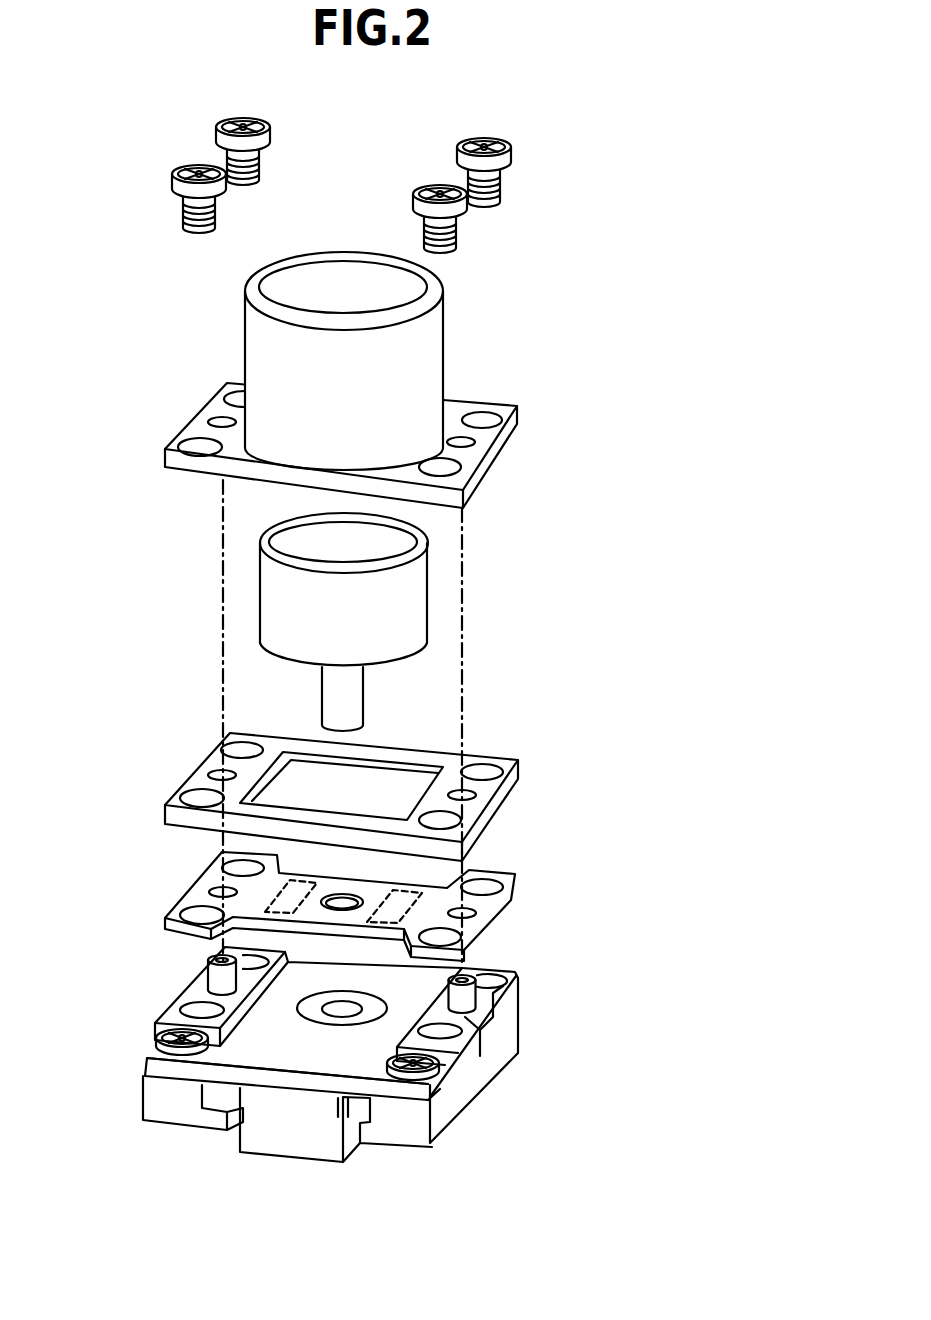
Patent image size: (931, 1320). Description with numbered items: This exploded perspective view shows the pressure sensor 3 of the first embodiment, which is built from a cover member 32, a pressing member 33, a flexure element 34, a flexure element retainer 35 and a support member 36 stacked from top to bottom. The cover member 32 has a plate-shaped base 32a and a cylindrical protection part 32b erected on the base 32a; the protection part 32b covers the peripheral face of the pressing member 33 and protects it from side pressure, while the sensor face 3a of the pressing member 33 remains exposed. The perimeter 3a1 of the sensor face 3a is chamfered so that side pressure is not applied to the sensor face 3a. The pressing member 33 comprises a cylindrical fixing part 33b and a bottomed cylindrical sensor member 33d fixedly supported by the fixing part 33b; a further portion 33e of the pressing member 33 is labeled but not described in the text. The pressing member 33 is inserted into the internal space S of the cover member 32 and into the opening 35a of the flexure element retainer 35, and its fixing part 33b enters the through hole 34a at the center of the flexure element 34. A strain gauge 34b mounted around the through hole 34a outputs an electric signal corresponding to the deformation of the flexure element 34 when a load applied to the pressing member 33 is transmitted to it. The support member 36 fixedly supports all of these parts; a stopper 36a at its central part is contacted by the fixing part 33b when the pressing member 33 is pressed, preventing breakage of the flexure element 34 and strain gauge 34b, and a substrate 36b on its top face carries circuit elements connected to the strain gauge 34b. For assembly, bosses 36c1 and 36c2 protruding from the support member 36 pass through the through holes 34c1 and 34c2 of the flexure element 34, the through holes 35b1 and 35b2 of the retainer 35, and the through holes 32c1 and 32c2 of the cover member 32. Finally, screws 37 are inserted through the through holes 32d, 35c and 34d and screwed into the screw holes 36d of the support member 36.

The pressure sensor 3 is at (675, 263).
The internal space S is at (390, 286).
The cover member 32 is at (346, 376).
The base 32a is at (513, 434).
The protection part 32b is at (427, 330).
The through hole 32c1 is at (220, 420).
The through hole 32c2 is at (478, 437).
The through holes 32d is at (190, 447).
The pressing member 33 is at (379, 617).
The sensor face 3a is at (384, 534).
The perimeter 3a1 is at (415, 553).
The sensor member 33d is at (388, 603).
The lower edge of sensor element 33e is at (280, 658).
The fixing part 33b is at (365, 700).
The flexure element retainer 35 is at (341, 790).
The opening 35a is at (366, 786).
The through hole 35b1 is at (221, 769).
The through hole 35b2 is at (478, 791).
The through holes 35c is at (198, 798).
The flexure element 34 is at (357, 913).
The through hole 34a is at (352, 897).
The strain gauge 34b is at (398, 922).
The through hole 34c1 is at (220, 889).
The through hole 34c2 is at (478, 906).
The through holes 34d is at (200, 912).
The support member 36 is at (338, 1083).
The stopper 36a is at (343, 1012).
The substrate 36b is at (190, 1072).
The boss 36c1 is at (207, 962).
The boss 36c2 is at (462, 998).
The screw holes 36d is at (190, 1012).
The screws 37 is at (502, 182).